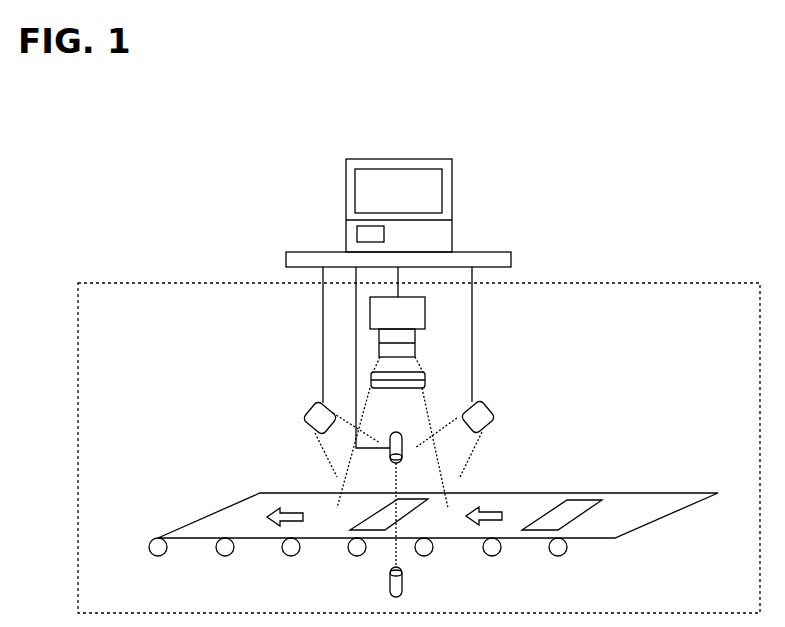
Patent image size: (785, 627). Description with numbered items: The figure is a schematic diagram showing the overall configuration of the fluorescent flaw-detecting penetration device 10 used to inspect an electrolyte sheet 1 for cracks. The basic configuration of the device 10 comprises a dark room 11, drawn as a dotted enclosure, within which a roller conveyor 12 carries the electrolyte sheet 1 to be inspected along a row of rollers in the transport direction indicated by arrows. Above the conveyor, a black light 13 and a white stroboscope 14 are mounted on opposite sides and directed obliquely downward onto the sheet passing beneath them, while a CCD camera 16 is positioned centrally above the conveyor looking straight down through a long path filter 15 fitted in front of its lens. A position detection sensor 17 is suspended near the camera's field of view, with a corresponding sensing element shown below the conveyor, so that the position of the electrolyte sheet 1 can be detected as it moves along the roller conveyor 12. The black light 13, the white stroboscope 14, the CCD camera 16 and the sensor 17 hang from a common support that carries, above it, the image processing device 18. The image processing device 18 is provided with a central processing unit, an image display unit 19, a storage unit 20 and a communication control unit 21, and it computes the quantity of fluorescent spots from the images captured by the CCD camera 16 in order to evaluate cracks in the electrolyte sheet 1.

The electrolyte sheet 1 is at (405, 522).
The fluorescent flaw-detecting penetration device 10 is at (658, 158).
The dark room 11 is at (693, 283).
The roller conveyor 12 is at (634, 505).
The black light 13 is at (315, 412).
The white stroboscope 14 is at (480, 416).
The long path filter 15 is at (410, 380).
The CCD camera 16 is at (405, 338).
The position detection sensor 17 is at (405, 450).
The image processing device 18 is at (428, 231).
The image display unit 19 is at (422, 190).
The storage unit 20 is at (370, 232).
The communication control unit 21 is at (500, 258).